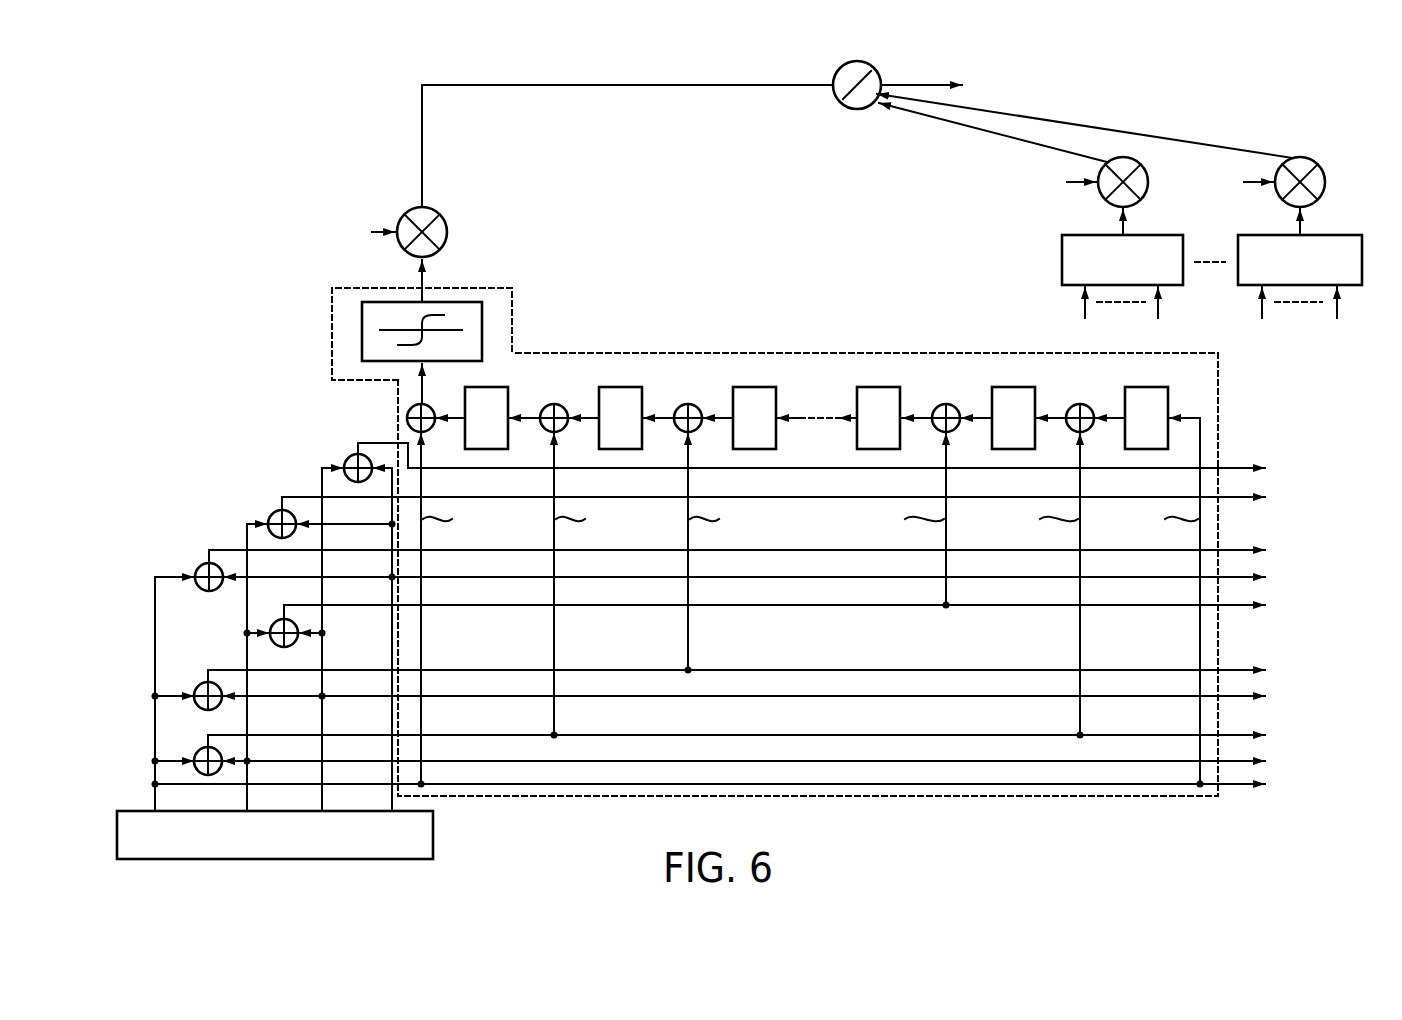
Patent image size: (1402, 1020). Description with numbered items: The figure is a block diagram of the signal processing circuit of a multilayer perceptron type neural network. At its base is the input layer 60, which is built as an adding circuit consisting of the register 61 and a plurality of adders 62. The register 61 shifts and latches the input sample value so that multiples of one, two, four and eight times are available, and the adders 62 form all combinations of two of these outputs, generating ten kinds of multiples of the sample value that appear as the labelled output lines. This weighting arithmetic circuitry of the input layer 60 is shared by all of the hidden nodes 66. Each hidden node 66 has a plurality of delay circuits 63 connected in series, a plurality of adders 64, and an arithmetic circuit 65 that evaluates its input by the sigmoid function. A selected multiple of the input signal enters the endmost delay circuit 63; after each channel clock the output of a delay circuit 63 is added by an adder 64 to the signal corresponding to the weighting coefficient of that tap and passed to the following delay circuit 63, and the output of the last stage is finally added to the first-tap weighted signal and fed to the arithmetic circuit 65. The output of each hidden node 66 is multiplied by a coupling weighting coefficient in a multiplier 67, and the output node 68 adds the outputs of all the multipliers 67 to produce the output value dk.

The input layer 60 is at (753, 460).
The register 61 is at (436, 830).
The adders 62 is at (347, 458).
The delay circuits 63 is at (481, 387).
The adders 64 is at (408, 412).
The arithmetic circuit 65 is at (452, 302).
The hidden node 66 is at (925, 353).
The multiplier 67 is at (445, 224).
The output node 68 is at (837, 98).